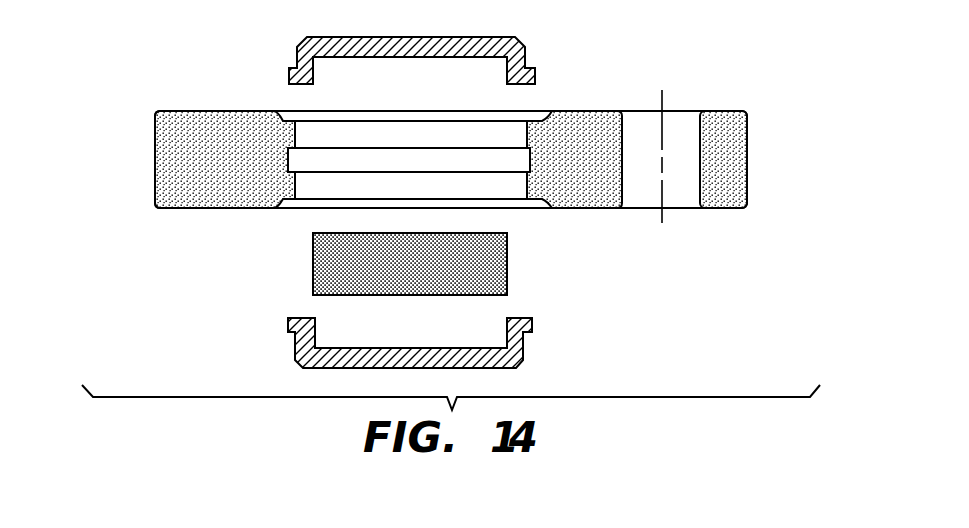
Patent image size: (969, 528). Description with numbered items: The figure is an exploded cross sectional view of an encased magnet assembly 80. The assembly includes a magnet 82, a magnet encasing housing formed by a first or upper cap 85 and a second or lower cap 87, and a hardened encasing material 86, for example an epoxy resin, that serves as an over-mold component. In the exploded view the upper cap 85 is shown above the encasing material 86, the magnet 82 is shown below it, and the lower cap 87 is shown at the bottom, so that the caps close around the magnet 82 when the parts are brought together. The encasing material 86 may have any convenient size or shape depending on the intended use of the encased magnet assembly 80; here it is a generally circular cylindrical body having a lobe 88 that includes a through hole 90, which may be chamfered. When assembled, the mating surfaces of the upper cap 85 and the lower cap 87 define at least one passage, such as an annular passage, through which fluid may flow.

The encased magnet assembly 80 is at (676, 49).
The magnet 82 is at (423, 278).
The upper cap 85 is at (300, 63).
The encasing material 86 is at (165, 157).
The lower cap 87 is at (300, 343).
The lobe 88 is at (735, 158).
The through hole 90 is at (663, 97).